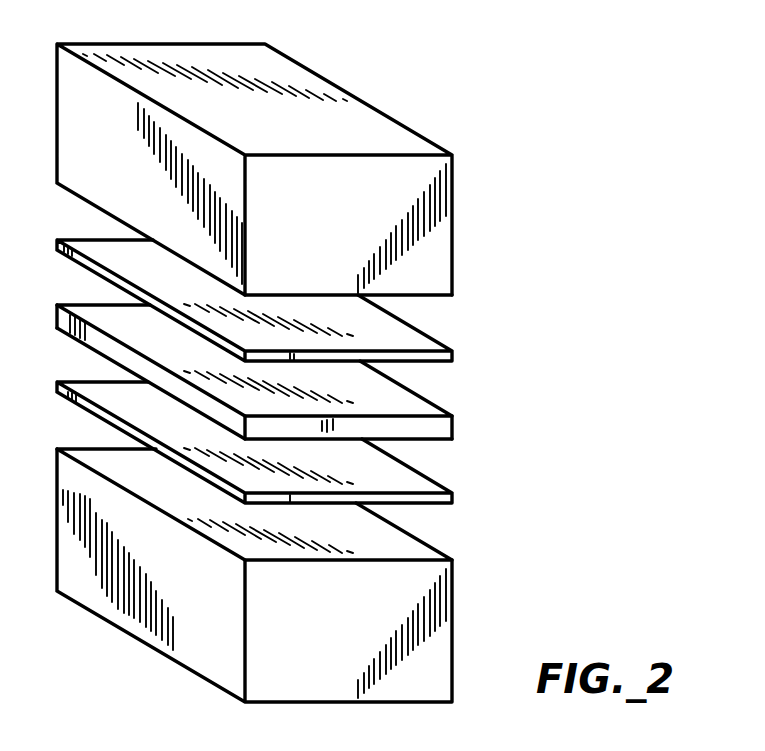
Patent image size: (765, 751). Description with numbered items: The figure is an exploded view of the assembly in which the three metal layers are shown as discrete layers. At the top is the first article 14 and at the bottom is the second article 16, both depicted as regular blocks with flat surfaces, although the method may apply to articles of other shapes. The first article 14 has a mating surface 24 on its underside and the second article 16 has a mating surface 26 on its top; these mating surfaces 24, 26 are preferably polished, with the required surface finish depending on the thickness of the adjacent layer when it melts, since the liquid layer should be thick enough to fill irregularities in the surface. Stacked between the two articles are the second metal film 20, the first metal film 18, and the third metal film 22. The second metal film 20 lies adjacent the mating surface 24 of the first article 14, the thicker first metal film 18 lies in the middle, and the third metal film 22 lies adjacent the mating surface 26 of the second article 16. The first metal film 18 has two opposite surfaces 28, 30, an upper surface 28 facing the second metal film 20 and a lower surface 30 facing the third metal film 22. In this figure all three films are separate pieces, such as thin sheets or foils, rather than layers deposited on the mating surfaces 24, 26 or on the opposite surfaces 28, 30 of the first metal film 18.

The first article 14 is at (289, 176).
The second article 16 is at (289, 575).
The first metal film 18 is at (290, 385).
The second metal film 20 is at (452, 356).
The third metal film 22 is at (452, 499).
The mating surface 24 is at (436, 298).
The mating surface 26 is at (432, 552).
The surface of layer 18 28 is at (428, 407).
The surface of layer 18 30 is at (440, 441).